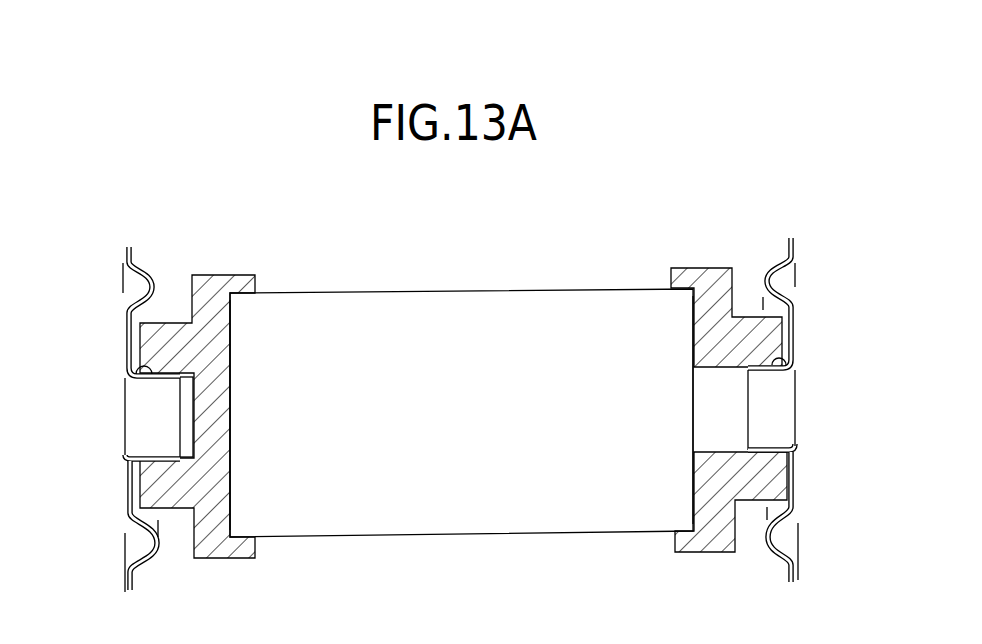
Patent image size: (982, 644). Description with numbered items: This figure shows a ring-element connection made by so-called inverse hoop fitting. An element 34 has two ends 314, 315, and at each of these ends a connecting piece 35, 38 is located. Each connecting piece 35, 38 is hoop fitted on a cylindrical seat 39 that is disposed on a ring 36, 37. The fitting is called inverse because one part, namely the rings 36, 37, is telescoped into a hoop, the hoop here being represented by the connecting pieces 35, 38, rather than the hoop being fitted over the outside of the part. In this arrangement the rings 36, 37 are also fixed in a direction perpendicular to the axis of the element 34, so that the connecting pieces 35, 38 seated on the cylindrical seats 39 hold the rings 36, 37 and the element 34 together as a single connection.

The element 34 is at (435, 283).
The end 314 is at (252, 345).
The end 315 is at (683, 345).
The connecting piece 38 is at (230, 266).
The connecting piece 35 is at (718, 265).
The ring 37 is at (128, 258).
The ring 36 is at (793, 258).
The cylindrical seat 39 is at (128, 375).